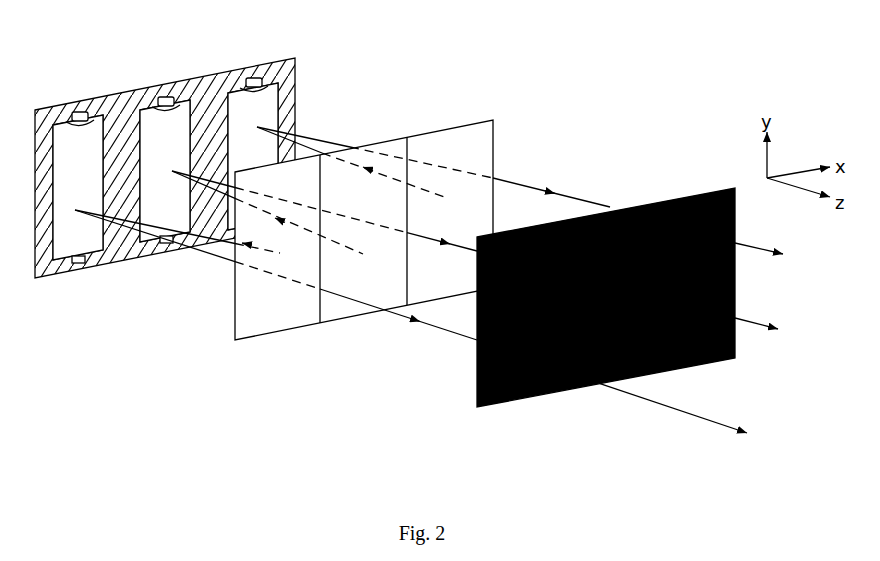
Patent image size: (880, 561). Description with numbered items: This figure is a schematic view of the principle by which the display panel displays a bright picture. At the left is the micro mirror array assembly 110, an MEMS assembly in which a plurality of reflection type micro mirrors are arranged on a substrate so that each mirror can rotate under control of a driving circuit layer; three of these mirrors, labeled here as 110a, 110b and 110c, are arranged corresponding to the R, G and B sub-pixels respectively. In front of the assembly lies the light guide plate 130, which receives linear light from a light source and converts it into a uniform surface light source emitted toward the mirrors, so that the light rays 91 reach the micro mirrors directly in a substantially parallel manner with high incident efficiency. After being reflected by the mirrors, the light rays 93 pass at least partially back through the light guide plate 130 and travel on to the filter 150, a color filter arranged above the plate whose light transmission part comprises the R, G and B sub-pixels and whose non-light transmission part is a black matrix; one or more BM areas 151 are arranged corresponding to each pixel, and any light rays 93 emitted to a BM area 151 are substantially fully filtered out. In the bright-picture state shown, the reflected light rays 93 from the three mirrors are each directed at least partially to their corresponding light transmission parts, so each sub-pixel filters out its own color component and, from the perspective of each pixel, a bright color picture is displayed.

The micro mirror array assembly 110 is at (67, 293).
The first light source (red) 110a is at (80, 137).
The second light source (green) 110b is at (165, 120).
The third light source (blue) 110c is at (258, 102).
The light rays 91 is at (320, 153).
The light rays 93 is at (525, 187).
The light guide plate 130 is at (292, 342).
The filter 150 is at (502, 410).
The BM area 151 is at (557, 392).